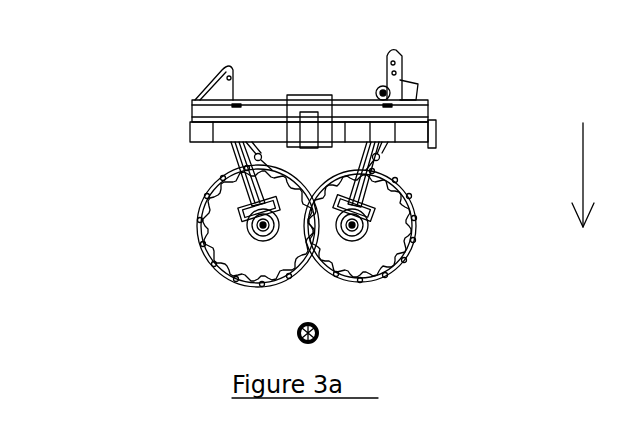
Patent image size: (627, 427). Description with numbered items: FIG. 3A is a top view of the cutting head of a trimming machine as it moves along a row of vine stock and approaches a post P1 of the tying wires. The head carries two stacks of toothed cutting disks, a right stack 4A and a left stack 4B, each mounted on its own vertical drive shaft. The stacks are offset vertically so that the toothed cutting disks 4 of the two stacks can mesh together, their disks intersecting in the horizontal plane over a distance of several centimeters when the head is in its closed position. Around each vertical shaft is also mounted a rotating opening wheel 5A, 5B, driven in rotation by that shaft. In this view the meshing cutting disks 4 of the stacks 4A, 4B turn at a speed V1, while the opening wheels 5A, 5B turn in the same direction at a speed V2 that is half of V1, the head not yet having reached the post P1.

The right stack 4A is at (188, 213).
The left stack 4B is at (421, 211).
The toothed cutting disks 4 is at (227, 208).
The opening wheel 5A is at (203, 227).
The opening wheel 5B is at (417, 222).
The speed of the cutting disks V1 is at (245, 262).
The speed of the opening wheels V2 is at (230, 293).
The post P1 is at (296, 331).